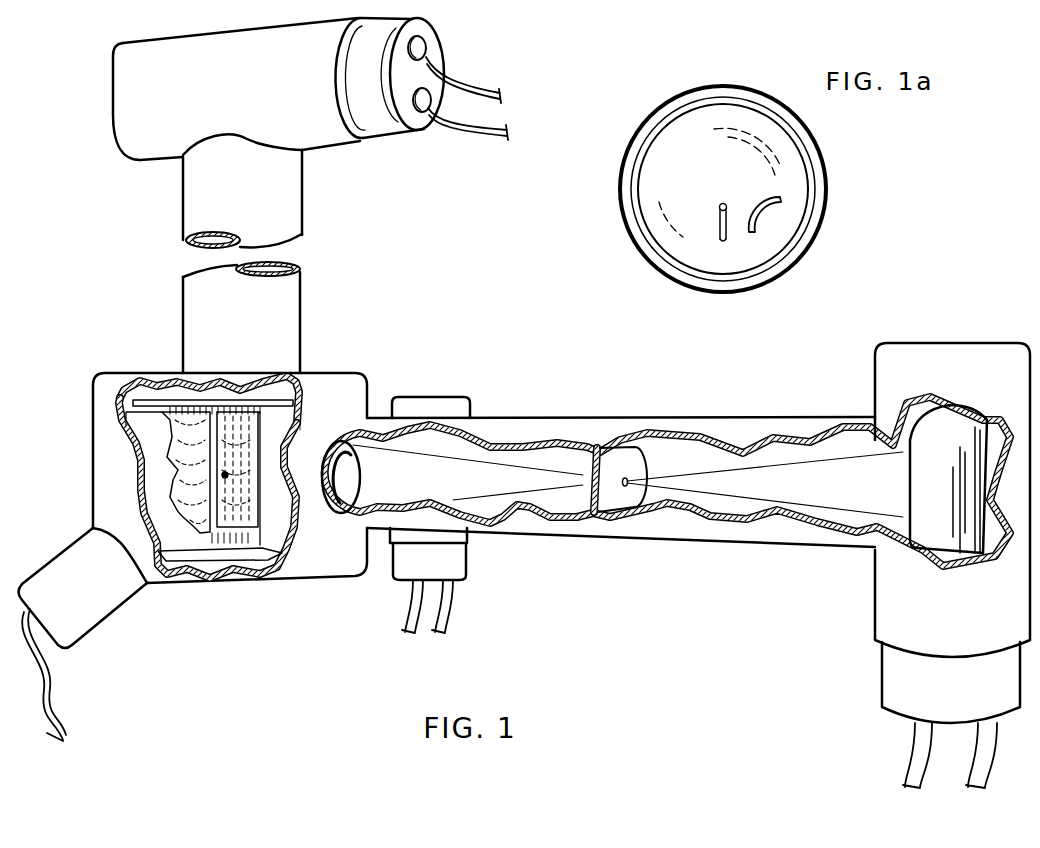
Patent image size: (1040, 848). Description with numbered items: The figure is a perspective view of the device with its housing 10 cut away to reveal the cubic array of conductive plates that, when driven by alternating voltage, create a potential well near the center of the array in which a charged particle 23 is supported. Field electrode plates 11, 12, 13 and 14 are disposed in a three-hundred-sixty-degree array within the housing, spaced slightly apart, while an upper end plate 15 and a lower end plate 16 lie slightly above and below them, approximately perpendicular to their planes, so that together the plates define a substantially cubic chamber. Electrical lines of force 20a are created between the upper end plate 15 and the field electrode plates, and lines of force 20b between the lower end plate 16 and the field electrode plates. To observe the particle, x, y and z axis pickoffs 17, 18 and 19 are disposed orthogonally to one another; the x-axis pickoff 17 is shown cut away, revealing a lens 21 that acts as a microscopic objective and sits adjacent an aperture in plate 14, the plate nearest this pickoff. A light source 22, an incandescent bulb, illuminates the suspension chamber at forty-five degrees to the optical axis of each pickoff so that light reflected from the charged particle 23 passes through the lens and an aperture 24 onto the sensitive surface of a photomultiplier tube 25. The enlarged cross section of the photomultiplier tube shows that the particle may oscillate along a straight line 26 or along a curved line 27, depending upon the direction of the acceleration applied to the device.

In FIG. 1, the housing 10 is at (93, 462).
In FIG. 1, the field electrode plate 11 is at (135, 425).
In FIG. 1, the field electrode plate 12 is at (182, 473).
In FIG. 1, the field electrode plate 13 is at (237, 473).
In FIG. 1, the field electrode plate 14 is at (280, 428).
In FIG. 1, the upper end plate 15 is at (200, 402).
In FIG. 1, the lower end plate 16 is at (240, 560).
In FIG. 1, the x-axis pickoff 17 is at (573, 417).
In FIG. 1, the y-axis pickoff 18 is at (303, 217).
In FIG. 1, the z-axis pickoff 19 is at (473, 407).
In FIG. 1, the electrical lines of force 20a is at (247, 413).
In FIG. 1, the lines of force 20b is at (278, 567).
In FIG. 1, the lens 21 is at (666, 481).
In FIG. 1, the light source 22 is at (107, 617).
In FIG. 1, the charged particle 23 is at (222, 471).
In FIG. 1, the aperture 24 is at (622, 488).
In FIG. 1, the photomultiplier tube 25 is at (920, 517).
In FIG. 1A, the straight line 26 is at (718, 242).
In FIG. 1A, the curved line 27 is at (757, 220).